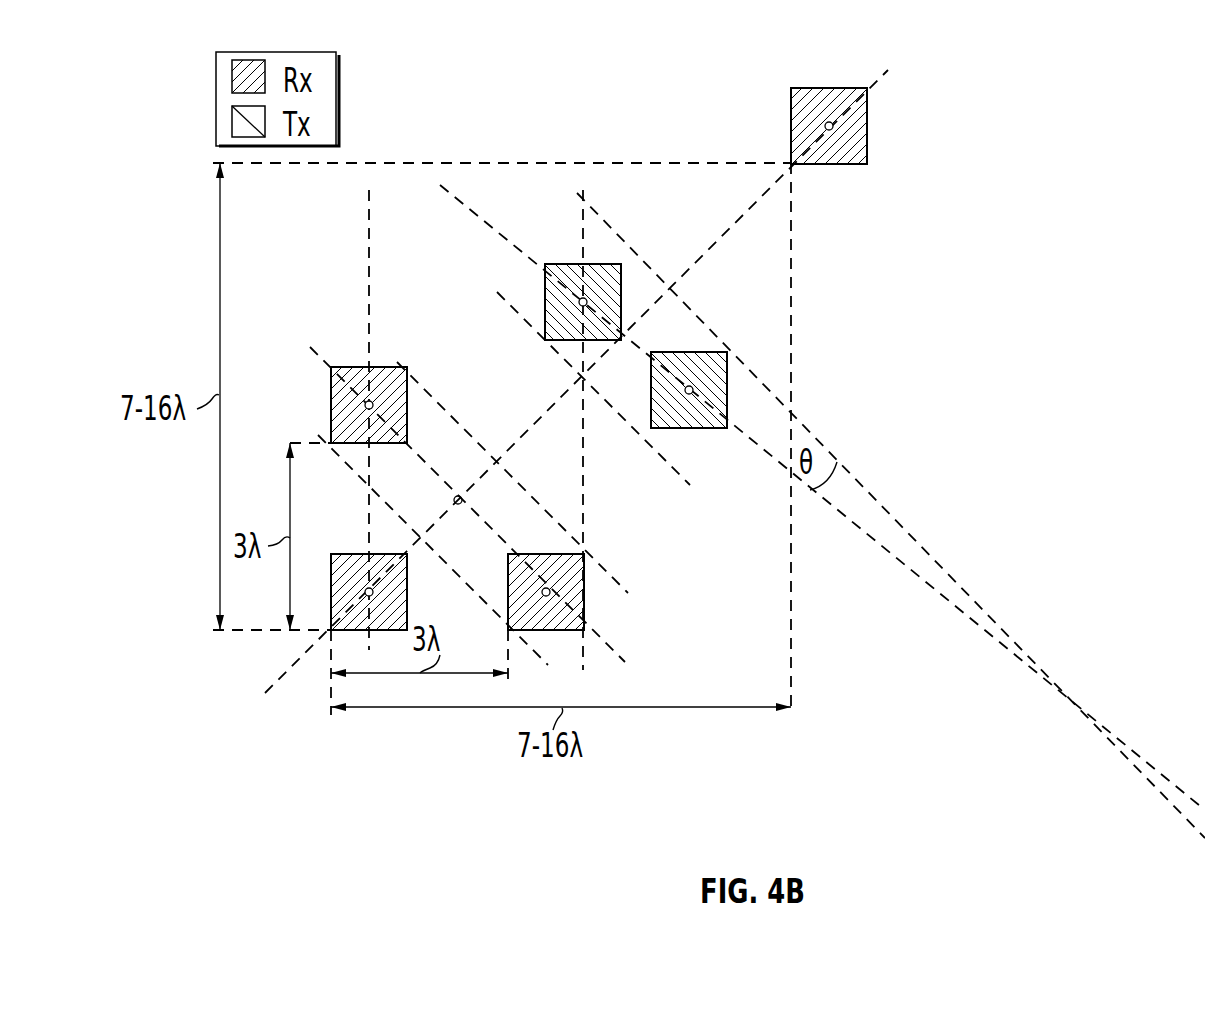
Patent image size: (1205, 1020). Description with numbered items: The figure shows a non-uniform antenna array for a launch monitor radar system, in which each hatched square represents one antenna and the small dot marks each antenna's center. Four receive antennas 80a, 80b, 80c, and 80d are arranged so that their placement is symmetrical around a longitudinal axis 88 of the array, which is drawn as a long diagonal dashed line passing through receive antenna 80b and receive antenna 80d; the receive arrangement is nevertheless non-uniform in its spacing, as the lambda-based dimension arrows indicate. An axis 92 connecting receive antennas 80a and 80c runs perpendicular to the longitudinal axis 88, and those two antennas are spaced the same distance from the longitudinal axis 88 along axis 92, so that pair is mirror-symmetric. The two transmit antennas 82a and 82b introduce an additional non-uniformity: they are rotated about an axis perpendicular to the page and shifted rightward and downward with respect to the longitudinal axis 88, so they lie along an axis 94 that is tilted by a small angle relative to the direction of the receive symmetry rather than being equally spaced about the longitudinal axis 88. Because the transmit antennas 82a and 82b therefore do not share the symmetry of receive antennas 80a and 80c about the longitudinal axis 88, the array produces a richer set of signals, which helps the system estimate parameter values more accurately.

The receive antenna 80a is at (356, 367).
The receive antenna 80b is at (357, 554).
The receive antenna 80c is at (584, 590).
The receive antenna 80d is at (822, 88).
The transmit antenna 82a is at (727, 392).
The transmit antenna 82b is at (621, 302).
The longitudinal axis 88 is at (745, 213).
The axis connecting antennas 80a and 80c 92 is at (310, 345).
The axis of the transmit antennas 94 is at (490, 224).